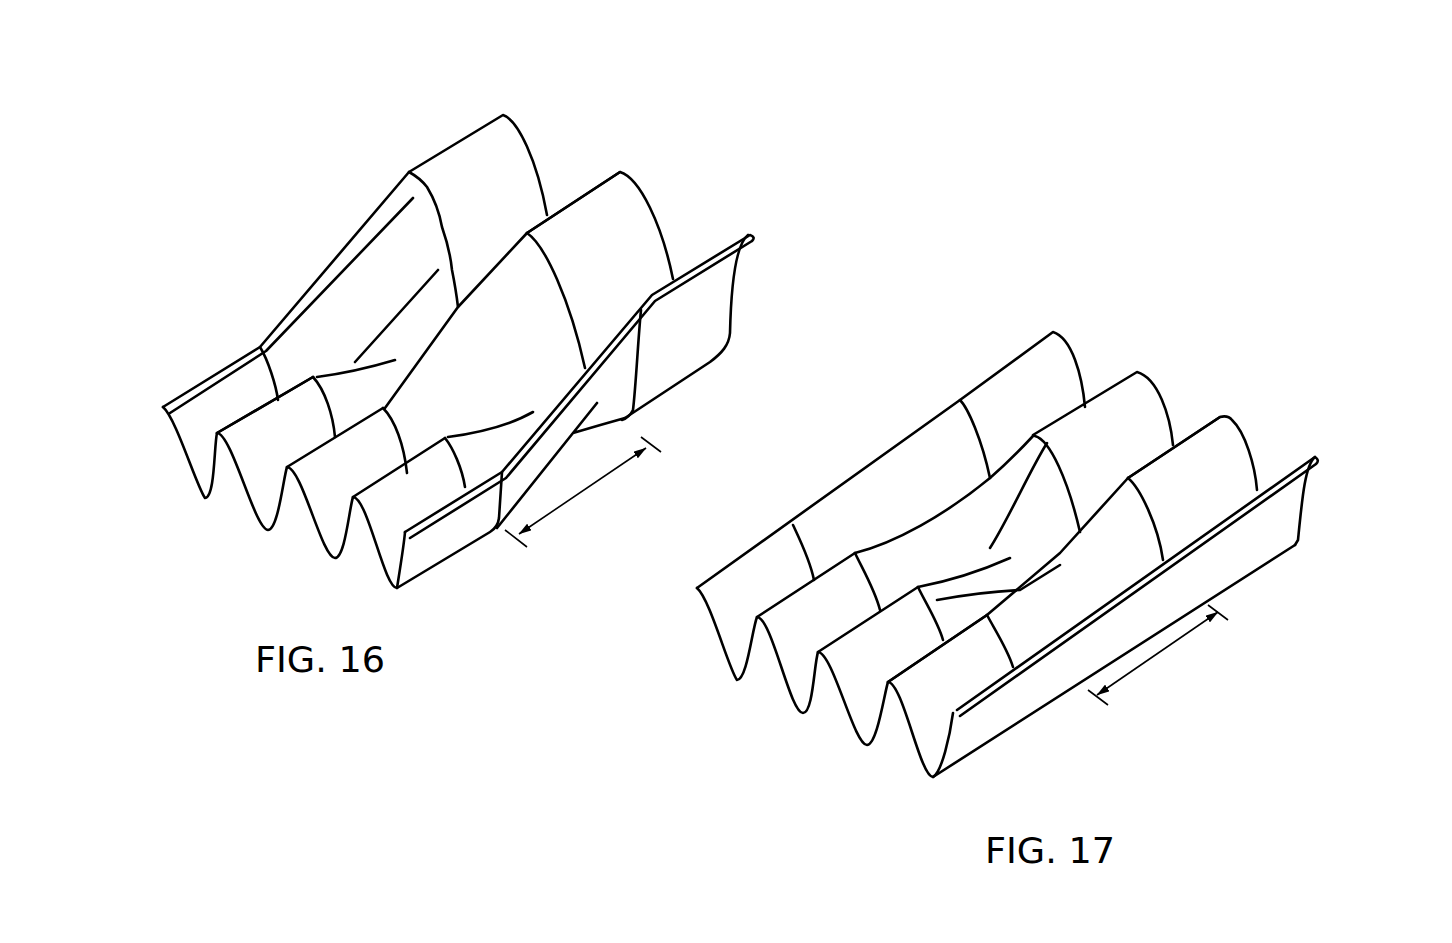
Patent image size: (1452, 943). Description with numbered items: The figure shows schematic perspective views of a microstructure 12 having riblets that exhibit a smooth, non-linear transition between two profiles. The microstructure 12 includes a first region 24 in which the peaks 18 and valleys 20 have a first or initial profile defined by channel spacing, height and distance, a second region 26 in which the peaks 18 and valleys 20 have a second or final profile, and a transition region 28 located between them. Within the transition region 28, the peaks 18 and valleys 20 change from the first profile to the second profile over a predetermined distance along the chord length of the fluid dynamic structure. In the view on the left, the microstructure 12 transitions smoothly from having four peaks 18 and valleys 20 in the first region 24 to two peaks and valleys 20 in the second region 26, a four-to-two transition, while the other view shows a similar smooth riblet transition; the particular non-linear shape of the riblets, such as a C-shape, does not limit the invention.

In FIG. 16, the microstructure 12 is at (490, 343).
In FIG. 17, the microstructure 12 is at (1046, 564).
In FIG. 16, the peaks 18 is at (252, 426).
In FIG. 17, the peaks 18 is at (1202, 437).
In FIG. 16, the valleys 20 is at (200, 484).
In FIG. 17, the valleys 20 is at (1258, 487).
In FIG. 16, the first region 24 is at (455, 562).
In FIG. 17, the first region 24 is at (1031, 731).
In FIG. 16, the second region 26 is at (705, 375).
In FIG. 17, the second region 26 is at (1277, 572).
In FIG. 16, the transition region 28 is at (588, 492).
In FIG. 17, the transition region 28 is at (1157, 669).